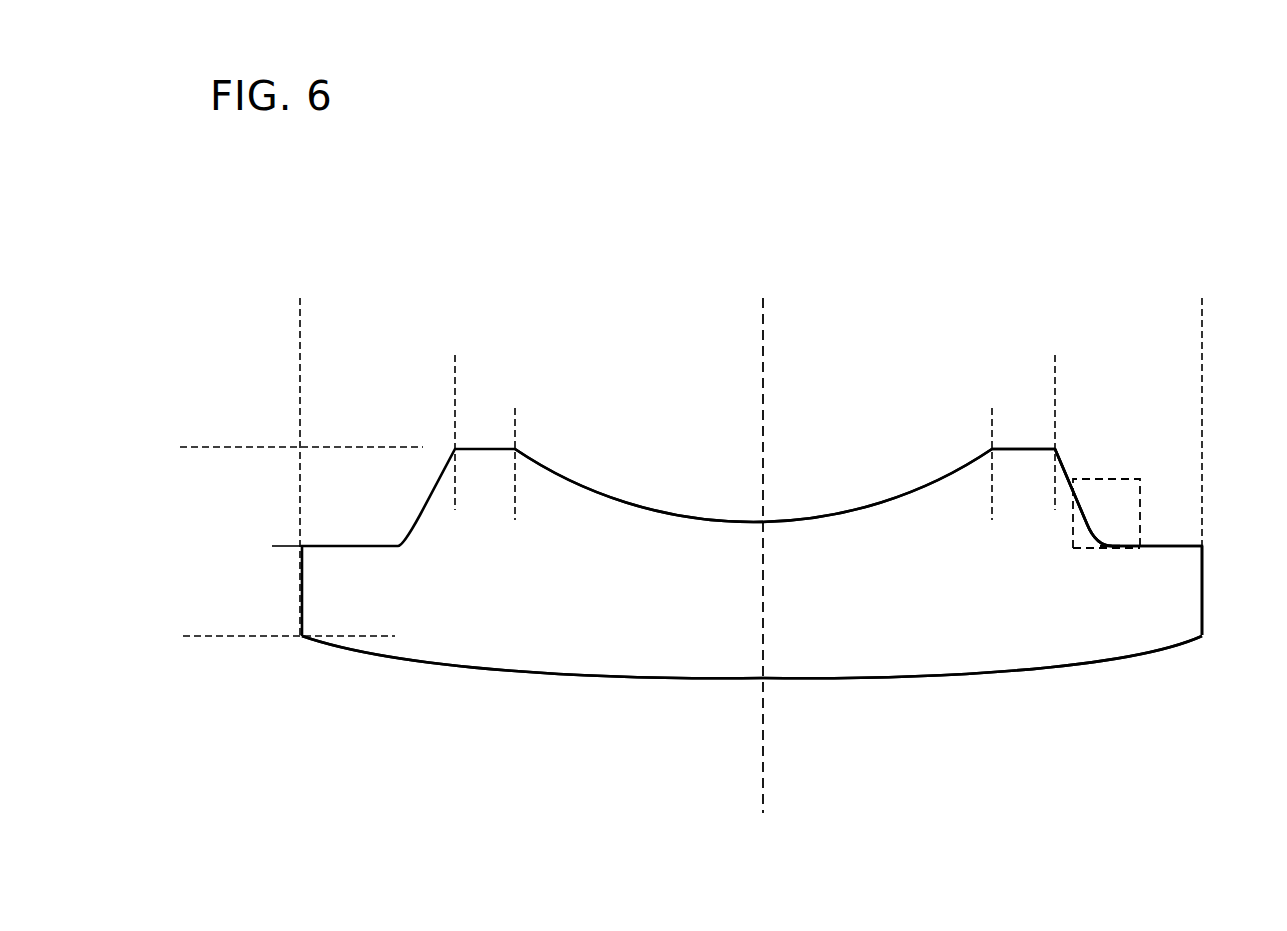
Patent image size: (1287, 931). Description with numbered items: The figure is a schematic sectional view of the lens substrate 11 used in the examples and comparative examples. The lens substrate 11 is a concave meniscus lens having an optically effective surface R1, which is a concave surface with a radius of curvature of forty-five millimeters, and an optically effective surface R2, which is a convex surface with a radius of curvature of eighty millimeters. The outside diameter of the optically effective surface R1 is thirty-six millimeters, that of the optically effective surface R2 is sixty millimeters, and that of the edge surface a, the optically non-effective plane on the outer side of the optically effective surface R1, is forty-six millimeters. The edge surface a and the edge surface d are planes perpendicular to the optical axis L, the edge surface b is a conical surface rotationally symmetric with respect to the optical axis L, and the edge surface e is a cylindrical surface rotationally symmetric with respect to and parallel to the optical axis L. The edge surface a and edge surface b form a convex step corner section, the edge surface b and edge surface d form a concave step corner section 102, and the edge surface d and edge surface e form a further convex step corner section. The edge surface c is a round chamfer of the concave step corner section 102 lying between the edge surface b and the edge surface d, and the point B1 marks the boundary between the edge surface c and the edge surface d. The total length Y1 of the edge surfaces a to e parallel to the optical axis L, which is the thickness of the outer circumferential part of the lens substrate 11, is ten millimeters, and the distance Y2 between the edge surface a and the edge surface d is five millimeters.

The lens substrate 11 is at (752, 563).
The concave step corner section 102 is at (1083, 498).
The point B1 is at (1110, 548).
The edge surface a is at (1019, 447).
The edge surface b is at (1066, 468).
The edge surface c is at (1096, 532).
The edge surface d is at (1170, 545).
The edge surface e is at (1203, 606).
The optically effective surface R1 is at (753, 485).
The optically effective surface R2 is at (752, 679).
The optical axis L is at (778, 555).
The total length Y1 is at (200, 634).
The distance Y2 is at (308, 544).